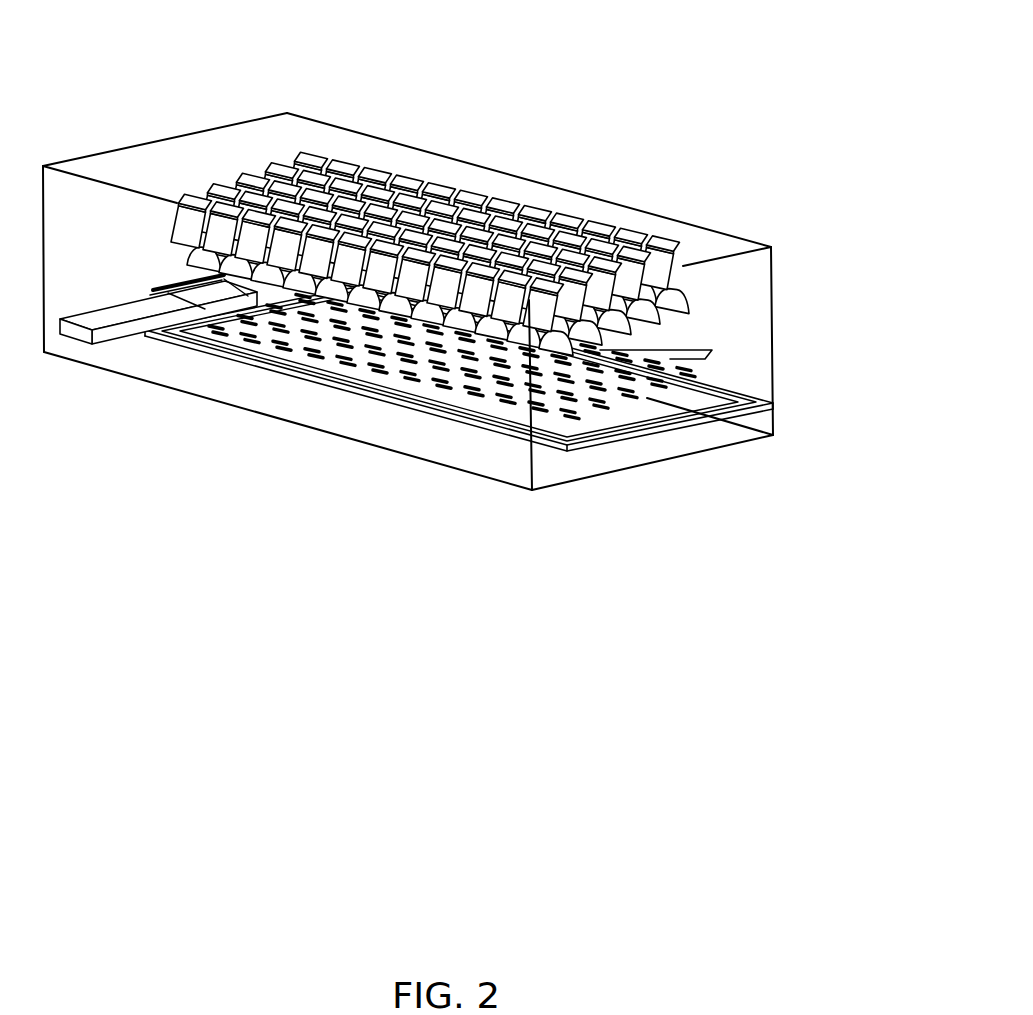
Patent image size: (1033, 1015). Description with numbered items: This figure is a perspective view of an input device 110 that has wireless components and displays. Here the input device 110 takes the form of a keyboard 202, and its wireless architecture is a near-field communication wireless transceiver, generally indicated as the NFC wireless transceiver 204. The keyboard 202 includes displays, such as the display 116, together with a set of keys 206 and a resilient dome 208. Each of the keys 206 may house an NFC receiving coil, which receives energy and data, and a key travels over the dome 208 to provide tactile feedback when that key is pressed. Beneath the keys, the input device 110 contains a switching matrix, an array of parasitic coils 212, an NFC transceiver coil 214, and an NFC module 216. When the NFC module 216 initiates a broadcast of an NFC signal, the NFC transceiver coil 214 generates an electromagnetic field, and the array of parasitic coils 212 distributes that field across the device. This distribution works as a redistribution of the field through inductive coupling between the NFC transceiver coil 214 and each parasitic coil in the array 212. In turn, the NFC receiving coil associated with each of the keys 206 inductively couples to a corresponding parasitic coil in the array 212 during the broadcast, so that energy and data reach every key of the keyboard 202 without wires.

The input device 110 is at (463, 957).
The display 116 is at (668, 242).
The keyboard 202 is at (575, 52).
The NFC wireless transceiver 204 is at (210, 425).
The keys 206 is at (473, 241).
The resilient dome 208 is at (688, 323).
The array of parasitic coils 212 is at (735, 388).
The NFC transceiver coil 214 is at (637, 442).
The NFC module 216 is at (112, 329).